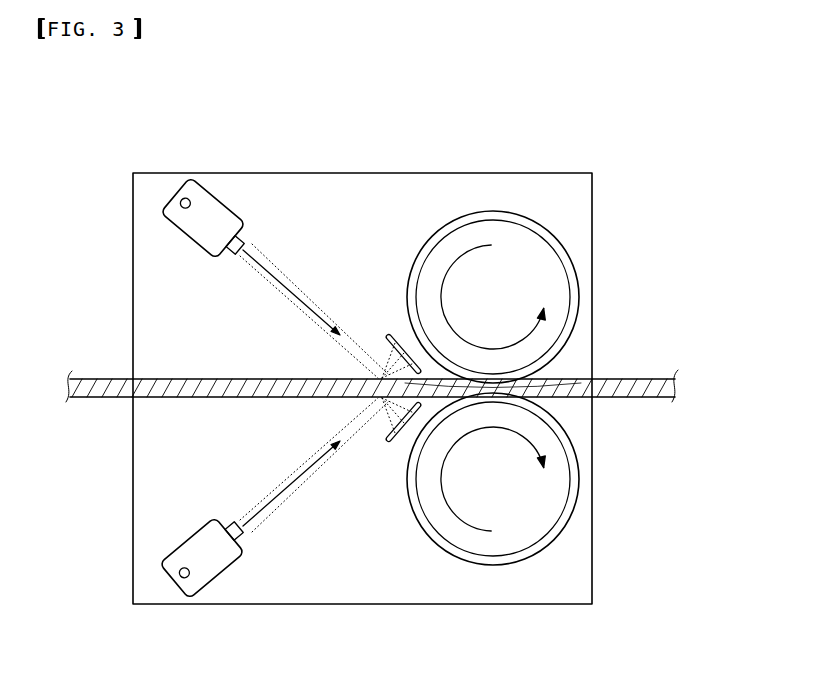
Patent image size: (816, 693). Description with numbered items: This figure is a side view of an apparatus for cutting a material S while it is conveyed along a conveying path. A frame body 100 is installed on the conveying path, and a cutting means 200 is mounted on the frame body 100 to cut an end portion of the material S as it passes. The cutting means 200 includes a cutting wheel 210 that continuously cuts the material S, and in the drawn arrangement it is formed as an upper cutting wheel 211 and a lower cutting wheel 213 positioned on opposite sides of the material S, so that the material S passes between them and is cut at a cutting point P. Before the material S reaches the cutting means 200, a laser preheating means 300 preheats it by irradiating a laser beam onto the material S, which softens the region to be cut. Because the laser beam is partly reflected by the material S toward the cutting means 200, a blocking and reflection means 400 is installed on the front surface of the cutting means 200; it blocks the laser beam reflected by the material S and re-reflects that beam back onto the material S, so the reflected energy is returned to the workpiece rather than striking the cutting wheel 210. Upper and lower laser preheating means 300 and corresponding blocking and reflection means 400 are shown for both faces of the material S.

The frame body 100 is at (440, 172).
The cutting means 200 is at (542, 391).
The cutting wheel 210 is at (542, 388).
The upper cutting wheel 211 is at (553, 236).
The lower cutting wheel 213 is at (553, 538).
The laser preheating means 300 is at (232, 203).
The blocking and reflection means 400 is at (386, 330).
The material S is at (101, 372).
The cutting point P is at (558, 377).